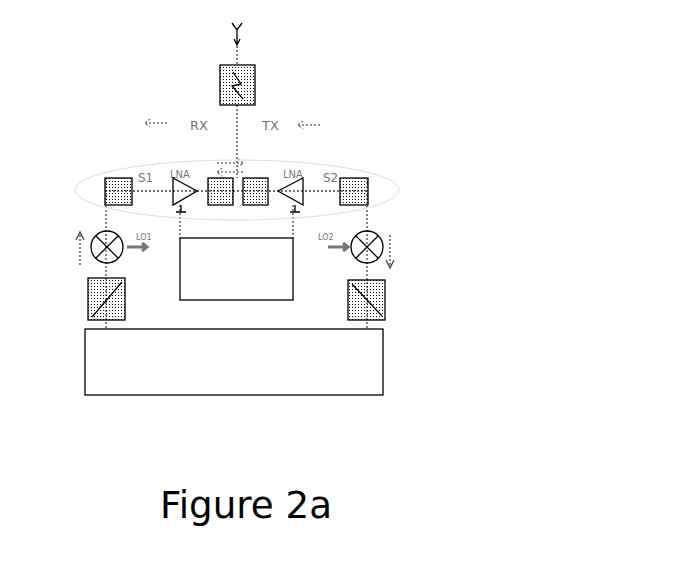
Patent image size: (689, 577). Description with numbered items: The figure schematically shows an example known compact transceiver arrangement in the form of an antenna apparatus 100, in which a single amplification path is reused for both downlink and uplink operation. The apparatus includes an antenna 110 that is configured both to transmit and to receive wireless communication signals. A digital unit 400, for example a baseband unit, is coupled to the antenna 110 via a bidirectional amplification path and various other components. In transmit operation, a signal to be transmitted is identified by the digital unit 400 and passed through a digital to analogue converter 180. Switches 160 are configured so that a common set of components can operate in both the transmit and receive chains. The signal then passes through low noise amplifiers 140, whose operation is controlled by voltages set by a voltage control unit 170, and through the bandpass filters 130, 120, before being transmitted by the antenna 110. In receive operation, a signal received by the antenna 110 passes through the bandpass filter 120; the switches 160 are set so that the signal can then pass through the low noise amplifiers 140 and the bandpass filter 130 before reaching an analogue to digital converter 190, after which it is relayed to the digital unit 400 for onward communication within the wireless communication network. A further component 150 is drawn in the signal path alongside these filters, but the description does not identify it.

The antenna apparatus 100 is at (453, 294).
The antenna 110 is at (249, 34).
The bandpass filter 120 is at (248, 98).
The bandpass filter 130 is at (222, 190).
The low noise amplifiers 140 is at (180, 190).
The transmit path filter 150 is at (257, 192).
The switches 160 is at (108, 190).
The voltage control unit 170 is at (236, 269).
The digital to analogue converter 180 is at (105, 295).
The analogue to digital converter 190 is at (382, 295).
The digital unit 400 is at (234, 362).